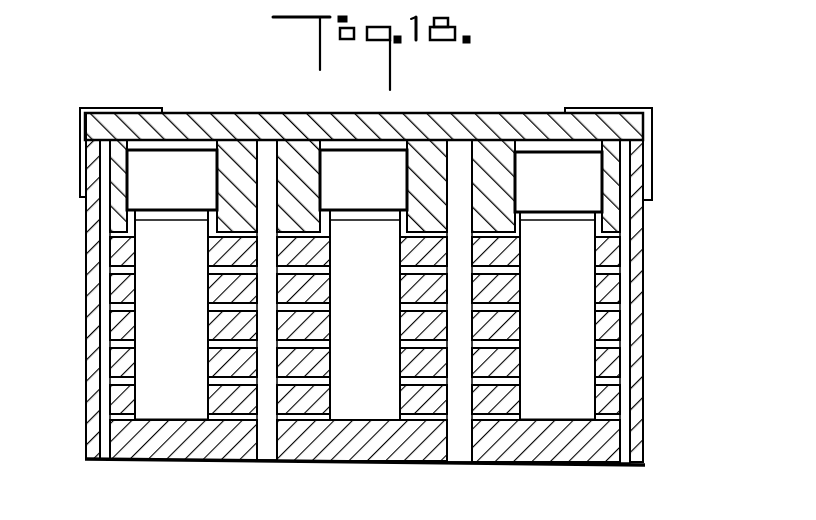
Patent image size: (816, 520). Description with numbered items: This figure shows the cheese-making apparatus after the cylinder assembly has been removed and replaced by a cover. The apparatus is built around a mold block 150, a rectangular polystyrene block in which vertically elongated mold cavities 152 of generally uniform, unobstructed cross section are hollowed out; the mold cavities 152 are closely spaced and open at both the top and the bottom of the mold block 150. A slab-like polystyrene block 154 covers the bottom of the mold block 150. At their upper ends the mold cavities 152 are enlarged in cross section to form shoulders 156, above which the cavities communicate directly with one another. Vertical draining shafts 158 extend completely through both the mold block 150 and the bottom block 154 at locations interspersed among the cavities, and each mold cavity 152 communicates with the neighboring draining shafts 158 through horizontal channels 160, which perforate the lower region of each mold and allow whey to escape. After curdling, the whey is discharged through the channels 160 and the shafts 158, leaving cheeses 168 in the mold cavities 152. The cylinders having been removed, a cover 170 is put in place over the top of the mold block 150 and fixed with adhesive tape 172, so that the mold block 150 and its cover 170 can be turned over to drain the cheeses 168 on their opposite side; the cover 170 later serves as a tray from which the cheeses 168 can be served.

The mold block 150 is at (92, 252).
The mold cavities 152 is at (167, 233).
The polystyrene block 154 is at (175, 462).
The shoulders 156 is at (214, 210).
The draining shafts 158 is at (107, 345).
The horizontal channels 160 is at (206, 343).
The cheeses 168 is at (147, 405).
The cover 170 is at (222, 112).
The adhesive tape 172 is at (88, 106).